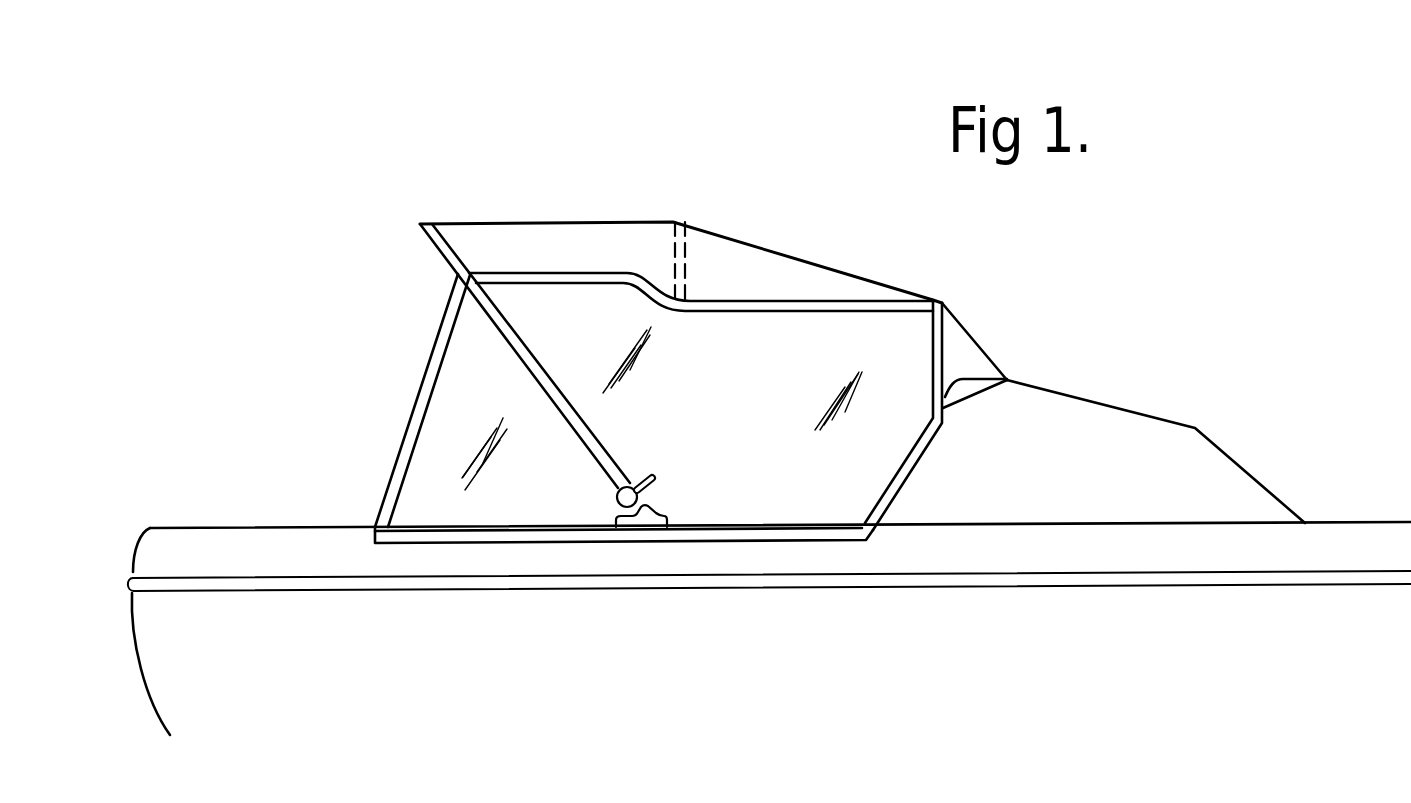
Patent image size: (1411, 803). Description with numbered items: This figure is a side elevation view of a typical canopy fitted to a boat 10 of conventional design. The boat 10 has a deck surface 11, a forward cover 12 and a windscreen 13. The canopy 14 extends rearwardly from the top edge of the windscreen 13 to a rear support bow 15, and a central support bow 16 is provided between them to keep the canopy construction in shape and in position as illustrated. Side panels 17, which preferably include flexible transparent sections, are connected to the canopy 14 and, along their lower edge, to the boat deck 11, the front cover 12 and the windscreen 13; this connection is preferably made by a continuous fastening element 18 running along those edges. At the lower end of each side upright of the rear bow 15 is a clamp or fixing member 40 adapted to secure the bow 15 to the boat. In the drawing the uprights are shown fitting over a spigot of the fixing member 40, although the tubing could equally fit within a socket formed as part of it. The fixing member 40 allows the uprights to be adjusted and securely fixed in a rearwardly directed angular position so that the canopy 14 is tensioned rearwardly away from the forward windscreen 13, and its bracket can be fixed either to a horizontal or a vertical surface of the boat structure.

The boat 10 is at (148, 455).
The deck surface 11 is at (308, 527).
The forward cover 12 is at (1137, 437).
The windscreen 13 is at (965, 328).
The canopy 14 is at (551, 204).
The rear support bow 15 is at (495, 328).
The central support bow 16 is at (687, 265).
The side panels 17 is at (761, 410).
The continuous fastening element 18 is at (448, 527).
The fixing member 40 is at (653, 488).